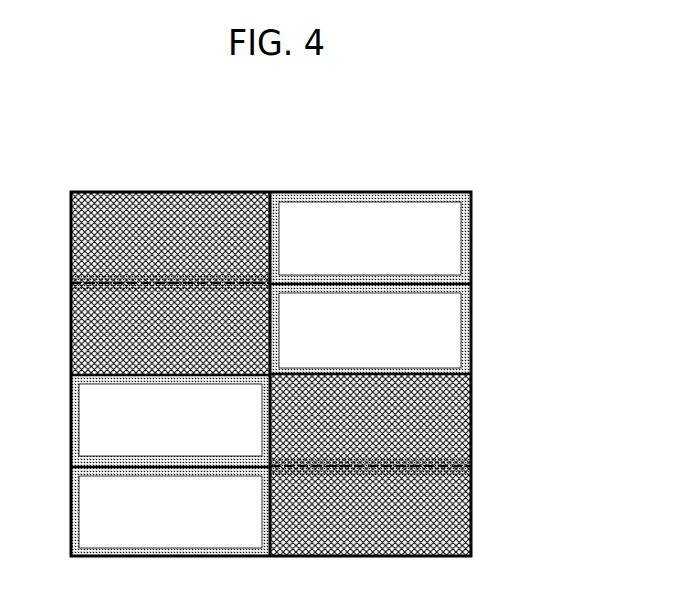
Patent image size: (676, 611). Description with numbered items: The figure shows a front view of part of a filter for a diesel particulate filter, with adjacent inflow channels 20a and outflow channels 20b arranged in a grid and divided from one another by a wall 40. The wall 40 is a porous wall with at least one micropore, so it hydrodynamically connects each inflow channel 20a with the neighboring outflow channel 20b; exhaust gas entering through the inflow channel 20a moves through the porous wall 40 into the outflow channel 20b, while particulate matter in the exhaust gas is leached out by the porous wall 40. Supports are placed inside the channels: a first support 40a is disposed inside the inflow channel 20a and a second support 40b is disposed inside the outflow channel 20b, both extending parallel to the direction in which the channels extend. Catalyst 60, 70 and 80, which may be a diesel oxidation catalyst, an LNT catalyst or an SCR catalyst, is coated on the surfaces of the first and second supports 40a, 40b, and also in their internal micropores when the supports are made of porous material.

The inflow channel 20a is at (360, 218).
The outflow channel 20b is at (160, 213).
The wall 40 is at (165, 368).
The first support 40a is at (463, 290).
The second support 40b is at (450, 446).
The catalyst 60 is at (403, 270).
The catalyst 70 is at (308, 360).
The catalyst 80 is at (467, 465).